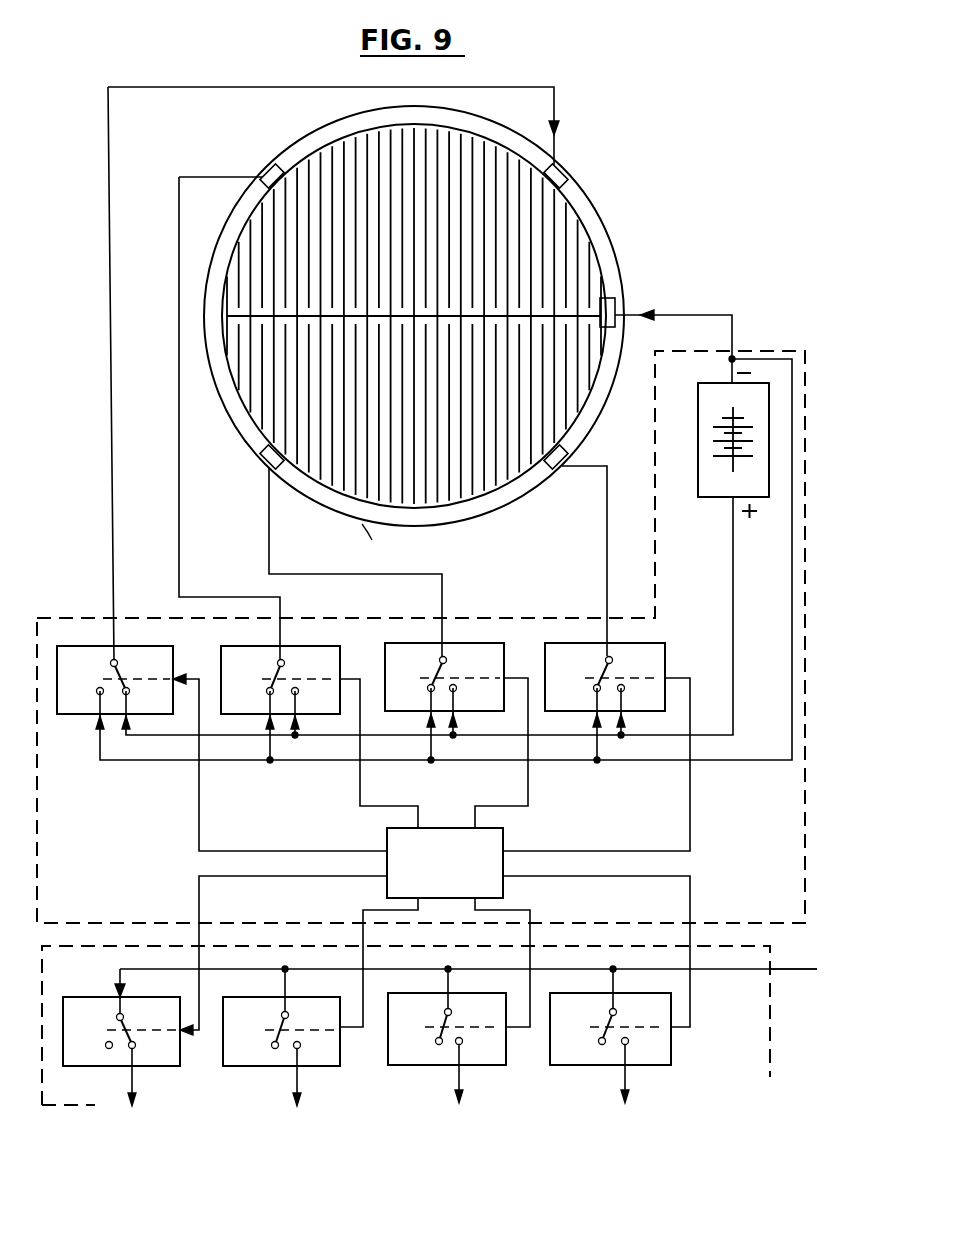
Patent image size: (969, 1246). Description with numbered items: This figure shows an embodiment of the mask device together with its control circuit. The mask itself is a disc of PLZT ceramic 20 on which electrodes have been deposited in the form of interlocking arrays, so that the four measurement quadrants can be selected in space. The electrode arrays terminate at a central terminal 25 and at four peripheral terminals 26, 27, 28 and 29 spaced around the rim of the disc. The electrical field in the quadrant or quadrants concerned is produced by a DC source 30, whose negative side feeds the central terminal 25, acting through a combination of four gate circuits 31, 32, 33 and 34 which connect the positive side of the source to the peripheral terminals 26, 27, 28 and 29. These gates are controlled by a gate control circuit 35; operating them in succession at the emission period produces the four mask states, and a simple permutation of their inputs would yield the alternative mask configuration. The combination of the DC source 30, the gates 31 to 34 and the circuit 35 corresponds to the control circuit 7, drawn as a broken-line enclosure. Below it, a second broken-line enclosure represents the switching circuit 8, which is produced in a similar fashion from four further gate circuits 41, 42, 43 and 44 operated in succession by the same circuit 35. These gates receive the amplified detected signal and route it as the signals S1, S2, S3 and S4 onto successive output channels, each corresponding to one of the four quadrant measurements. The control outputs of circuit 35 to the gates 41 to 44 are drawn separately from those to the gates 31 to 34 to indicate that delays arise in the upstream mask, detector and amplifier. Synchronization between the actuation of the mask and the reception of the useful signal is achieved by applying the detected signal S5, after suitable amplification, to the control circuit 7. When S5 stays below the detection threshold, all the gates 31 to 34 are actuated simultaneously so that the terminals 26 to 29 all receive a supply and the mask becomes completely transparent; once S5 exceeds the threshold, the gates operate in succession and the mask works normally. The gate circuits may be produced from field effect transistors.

The control circuit 7 is at (70, 618).
The switching device 8 is at (735, 946).
The PLZT ceramic 20 is at (604, 226).
The electrode terminal 25 is at (608, 296).
The mask terminal 26 is at (566, 176).
The mask terminal 27 is at (263, 168).
The mask terminal 28 is at (262, 462).
The mask terminal 29 is at (560, 467).
The DC source 30 is at (716, 497).
The gate circuit 31 is at (140, 646).
The gate circuit 32 is at (640, 643).
The gate circuit 33 is at (465, 643).
The gate circuit 34 is at (300, 646).
The gate control circuit 35 is at (463, 828).
The gate circuit 41 is at (97, 1066).
The gate circuit 42 is at (594, 1065).
The gate circuit 43 is at (430, 1065).
The gate circuit 44 is at (262, 1066).
The detected signal S1 is at (135, 1078).
The detected signal S2 is at (628, 1075).
The detected signal S3 is at (462, 1075).
The detected signal S4 is at (300, 1078).
The detected signal S5 is at (785, 969).